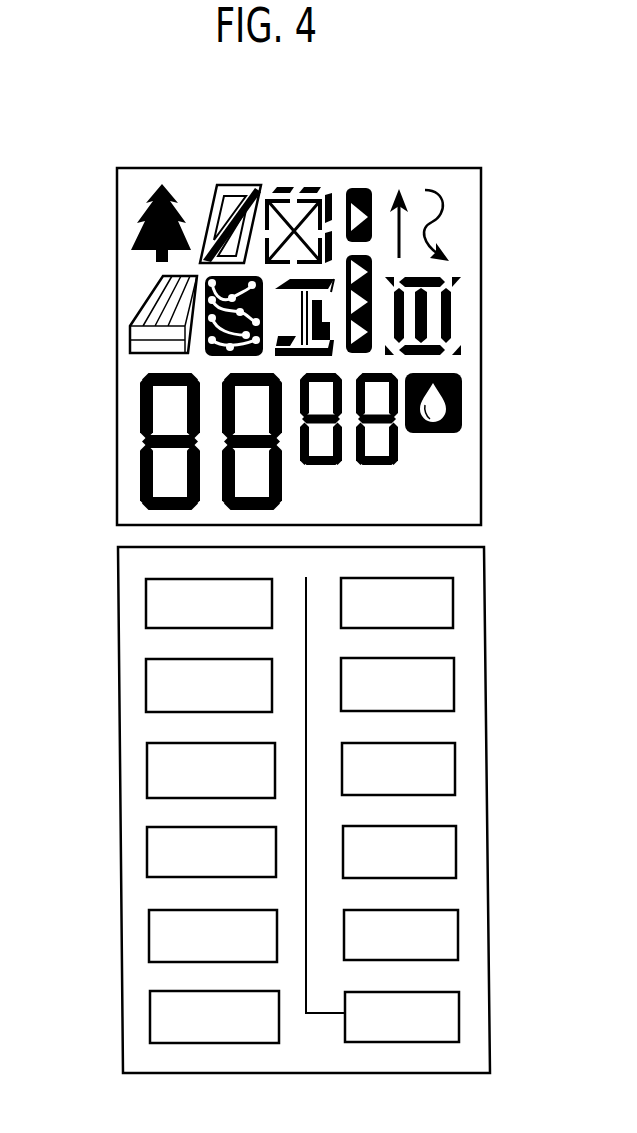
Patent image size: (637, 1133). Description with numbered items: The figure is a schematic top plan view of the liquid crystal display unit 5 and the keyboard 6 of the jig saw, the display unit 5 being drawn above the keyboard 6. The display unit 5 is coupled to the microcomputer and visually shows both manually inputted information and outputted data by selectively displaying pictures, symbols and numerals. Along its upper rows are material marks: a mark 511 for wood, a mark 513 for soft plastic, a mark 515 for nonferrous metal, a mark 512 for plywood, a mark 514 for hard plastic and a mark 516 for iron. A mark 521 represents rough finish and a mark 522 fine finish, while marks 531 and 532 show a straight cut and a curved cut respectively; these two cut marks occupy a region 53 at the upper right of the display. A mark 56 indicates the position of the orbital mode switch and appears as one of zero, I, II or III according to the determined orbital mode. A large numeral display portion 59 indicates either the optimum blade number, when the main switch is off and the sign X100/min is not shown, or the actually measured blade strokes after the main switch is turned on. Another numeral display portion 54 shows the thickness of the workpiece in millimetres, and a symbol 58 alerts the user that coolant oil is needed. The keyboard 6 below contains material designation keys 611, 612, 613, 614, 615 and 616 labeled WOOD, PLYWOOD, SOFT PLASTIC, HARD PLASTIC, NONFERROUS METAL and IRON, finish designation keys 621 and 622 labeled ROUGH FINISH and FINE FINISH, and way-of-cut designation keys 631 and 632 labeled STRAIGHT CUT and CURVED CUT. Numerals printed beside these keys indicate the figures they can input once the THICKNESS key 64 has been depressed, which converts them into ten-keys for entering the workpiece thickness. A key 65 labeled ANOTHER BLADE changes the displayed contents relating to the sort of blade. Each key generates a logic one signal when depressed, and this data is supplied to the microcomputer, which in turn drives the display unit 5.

The display unit 5 is at (117, 485).
The cut mode indicator section 53 is at (473, 180).
The numeral display portion 54 is at (390, 463).
The mark 56 is at (455, 318).
The symbol 58 is at (462, 400).
The numeral display portion 59 is at (140, 418).
The mark 511 is at (165, 183).
The mark 512 is at (128, 318).
The mark 513 is at (226, 183).
The mark 514 is at (213, 273).
The mark 515 is at (282, 185).
The mark 516 is at (283, 355).
The mark 521 is at (352, 190).
The mark 522 is at (373, 255).
The mark 531 is at (405, 200).
The mark 532 is at (443, 213).
The keyboard 6 is at (226, 1075).
The key 611 is at (146, 600).
The key 612 is at (453, 611).
The key 613 is at (146, 677).
The key 614 is at (454, 690).
The key 615 is at (147, 770).
The key 616 is at (455, 772).
The key 621 is at (147, 853).
The key 622 is at (456, 855).
The key 631 is at (149, 938).
The key 632 is at (458, 937).
The key 64 is at (459, 1020).
The key 65 is at (150, 1018).